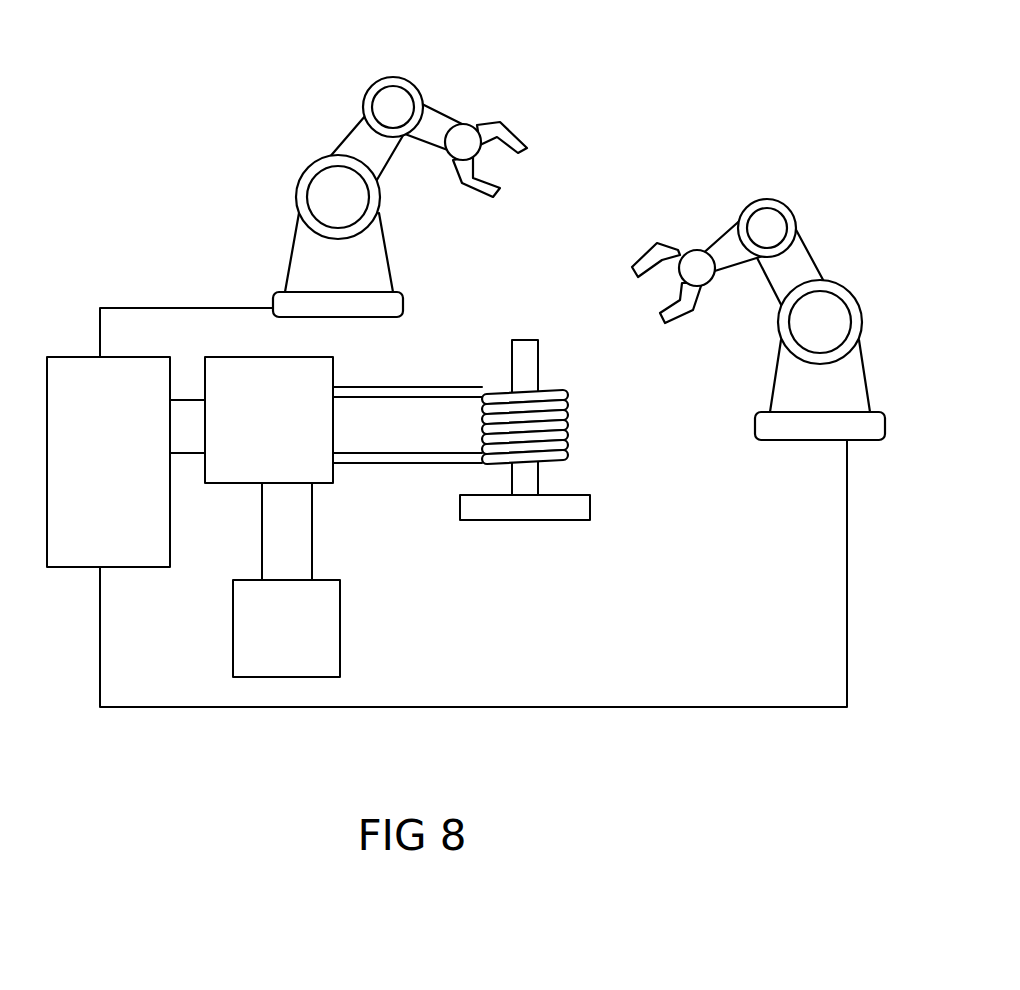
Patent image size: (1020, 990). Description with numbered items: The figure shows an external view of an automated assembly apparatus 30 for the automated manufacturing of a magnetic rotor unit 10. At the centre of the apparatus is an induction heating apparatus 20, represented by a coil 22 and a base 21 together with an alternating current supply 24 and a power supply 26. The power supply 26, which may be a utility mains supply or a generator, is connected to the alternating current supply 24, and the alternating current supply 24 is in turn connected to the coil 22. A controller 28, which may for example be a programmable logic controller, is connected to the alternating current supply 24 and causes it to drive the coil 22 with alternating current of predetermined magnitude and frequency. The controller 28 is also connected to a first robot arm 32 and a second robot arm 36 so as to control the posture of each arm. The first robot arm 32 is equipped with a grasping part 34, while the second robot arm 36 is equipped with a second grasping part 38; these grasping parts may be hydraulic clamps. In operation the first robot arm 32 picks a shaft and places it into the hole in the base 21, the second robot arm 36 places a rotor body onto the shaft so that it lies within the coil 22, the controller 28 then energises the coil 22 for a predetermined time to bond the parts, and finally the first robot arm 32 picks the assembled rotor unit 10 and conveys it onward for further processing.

The rotor unit 10 is at (523, 328).
The induction heating apparatus 20 is at (53, 580).
The base 21 is at (528, 523).
The coil 22 is at (572, 430).
The alternating current supply 24 is at (285, 447).
The power supply 26 is at (305, 650).
The controller 28 is at (135, 491).
The automated assembly apparatus 30 is at (100, 122).
The first robot arm 32 is at (310, 150).
The grasping part 34 is at (505, 112).
The second robot arm 36 is at (870, 363).
The second grasping part 38 is at (660, 238).